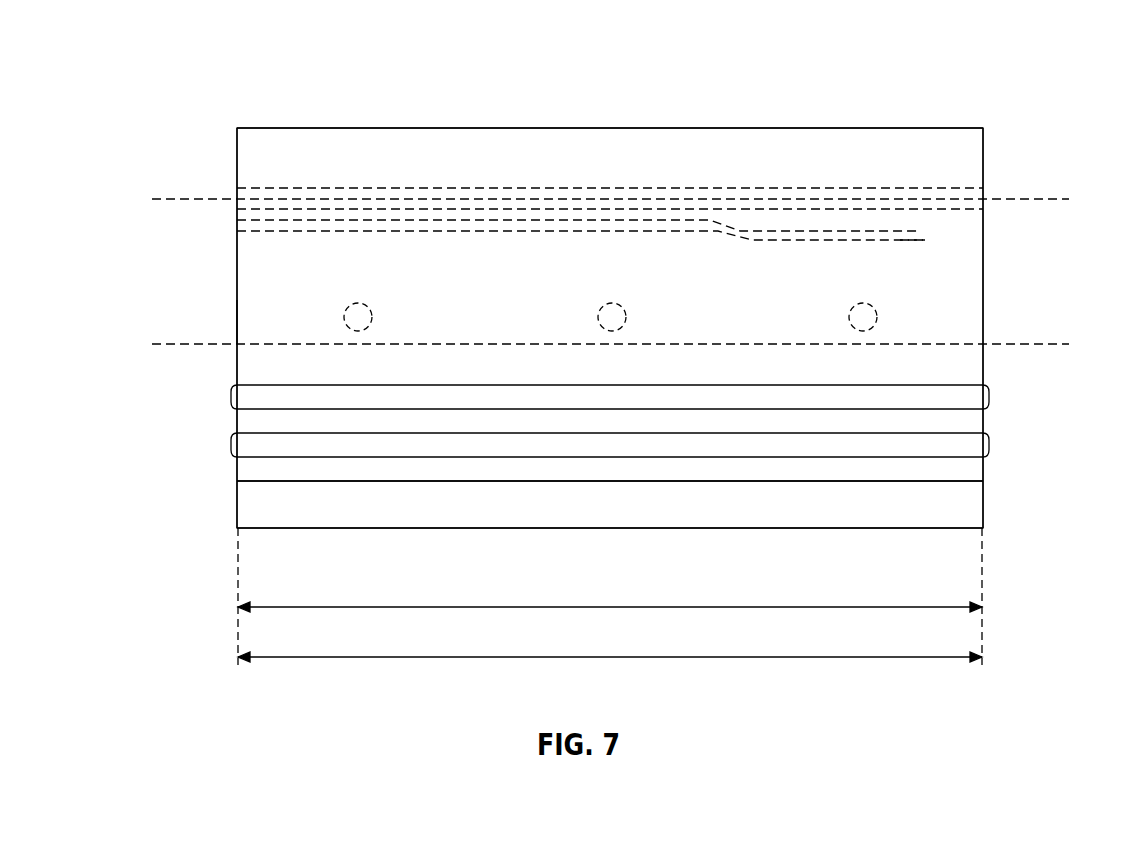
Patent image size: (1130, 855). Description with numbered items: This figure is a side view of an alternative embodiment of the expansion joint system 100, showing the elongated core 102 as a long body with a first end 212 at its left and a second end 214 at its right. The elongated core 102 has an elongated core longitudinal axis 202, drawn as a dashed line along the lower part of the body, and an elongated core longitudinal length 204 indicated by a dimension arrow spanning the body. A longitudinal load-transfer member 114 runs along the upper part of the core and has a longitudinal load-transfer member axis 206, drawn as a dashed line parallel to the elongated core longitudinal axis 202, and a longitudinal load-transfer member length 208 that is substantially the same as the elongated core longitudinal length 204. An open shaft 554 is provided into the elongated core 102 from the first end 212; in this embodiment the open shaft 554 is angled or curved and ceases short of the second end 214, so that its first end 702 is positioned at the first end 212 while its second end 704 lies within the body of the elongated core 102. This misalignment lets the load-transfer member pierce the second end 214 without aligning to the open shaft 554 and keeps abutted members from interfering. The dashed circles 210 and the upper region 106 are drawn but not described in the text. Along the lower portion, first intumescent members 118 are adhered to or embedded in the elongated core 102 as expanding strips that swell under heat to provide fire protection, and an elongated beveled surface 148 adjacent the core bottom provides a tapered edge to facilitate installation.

The expansion joint system 100 is at (128, 84).
The housing body 106 is at (360, 145).
The longitudinal load-transfer member 114 is at (257, 188).
The longitudinal load-transfer member axis 206 is at (1003, 197).
The open shaft 554 is at (253, 223).
The first end of the open shaft 702 is at (248, 230).
The second end of the open shaft 704 is at (925, 238).
The second end 214 is at (985, 275).
The elongated core 102 is at (253, 272).
The first end 212 is at (237, 307).
The elongated core longitudinal axis 202 is at (1005, 343).
The fastener openings 210 is at (358, 303).
The first intumescent member 118 is at (255, 395).
The elongated beveled surface 148 is at (255, 497).
The elongated core longitudinal length 204 is at (610, 606).
The longitudinal load-transfer member length 208 is at (610, 658).